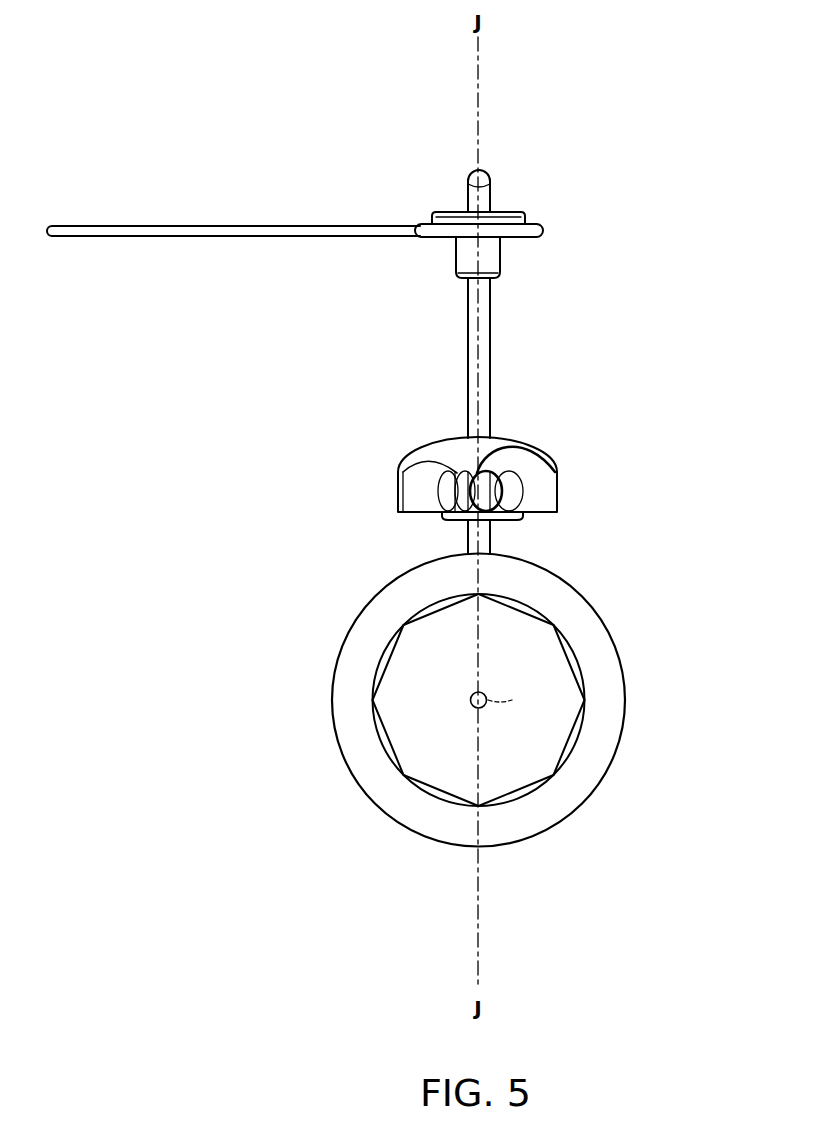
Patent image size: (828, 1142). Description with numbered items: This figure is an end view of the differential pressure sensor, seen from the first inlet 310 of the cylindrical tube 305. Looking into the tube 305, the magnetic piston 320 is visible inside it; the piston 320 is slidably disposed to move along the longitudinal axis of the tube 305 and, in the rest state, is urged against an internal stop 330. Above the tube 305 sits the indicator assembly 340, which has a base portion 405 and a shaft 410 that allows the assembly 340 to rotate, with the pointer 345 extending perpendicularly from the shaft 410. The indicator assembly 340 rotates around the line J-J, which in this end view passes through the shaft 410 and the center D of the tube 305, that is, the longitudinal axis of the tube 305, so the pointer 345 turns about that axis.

The cylindrical tube 305 is at (627, 700).
The first inlet 310 is at (501, 729).
The magnetic piston 320 is at (451, 718).
The internal stop 330 is at (523, 608).
The indicator assembly 340 is at (396, 397).
The pointer 345 is at (233, 225).
The base portion 405 is at (553, 469).
The shaft 410 is at (491, 369).